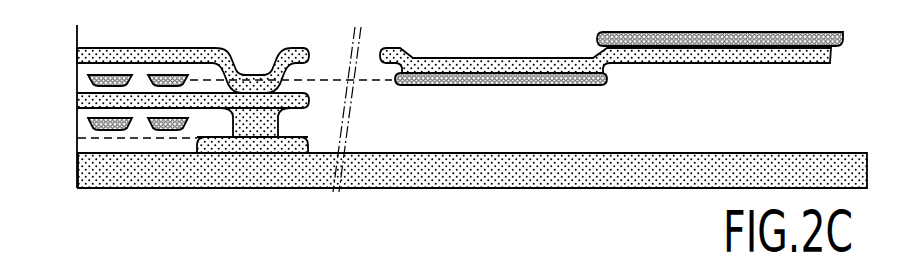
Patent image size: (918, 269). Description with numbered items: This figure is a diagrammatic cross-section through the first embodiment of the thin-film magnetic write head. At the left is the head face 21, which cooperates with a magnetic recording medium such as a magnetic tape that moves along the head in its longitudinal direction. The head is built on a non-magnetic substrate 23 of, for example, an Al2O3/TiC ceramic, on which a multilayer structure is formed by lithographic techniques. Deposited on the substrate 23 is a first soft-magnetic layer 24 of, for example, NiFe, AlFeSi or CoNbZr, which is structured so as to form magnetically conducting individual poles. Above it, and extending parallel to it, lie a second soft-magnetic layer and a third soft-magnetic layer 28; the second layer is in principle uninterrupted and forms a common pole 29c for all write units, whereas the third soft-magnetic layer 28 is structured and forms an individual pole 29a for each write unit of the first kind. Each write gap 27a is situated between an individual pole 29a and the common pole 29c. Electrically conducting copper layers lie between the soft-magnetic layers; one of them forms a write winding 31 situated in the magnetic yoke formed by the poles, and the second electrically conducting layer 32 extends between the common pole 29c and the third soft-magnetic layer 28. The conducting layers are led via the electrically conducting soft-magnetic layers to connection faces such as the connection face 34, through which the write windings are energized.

The head face 21 is at (77, 44).
The non-magnetic substrate 23 is at (155, 177).
The first soft-magnetic layer 24 is at (260, 147).
The write gap 27a is at (84, 68).
The individual pole 29a is at (183, 48).
The common pole 29c is at (140, 92).
The write winding 31 is at (182, 80).
The second electrically conducting layer 32 is at (553, 86).
The third soft-magnetic layer 28 is at (715, 58).
The connection face 34 is at (808, 40).